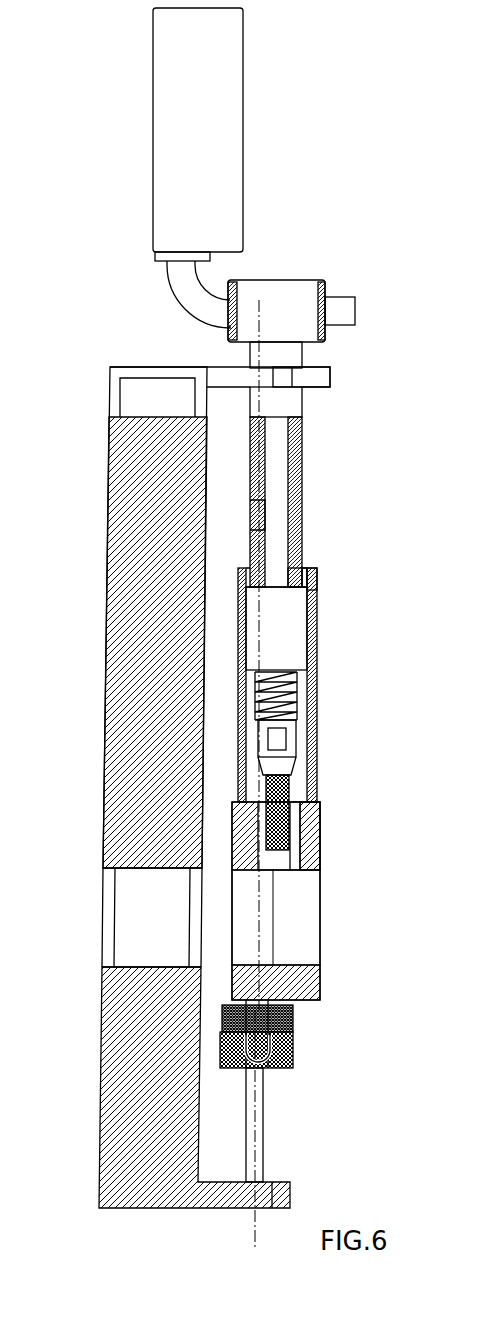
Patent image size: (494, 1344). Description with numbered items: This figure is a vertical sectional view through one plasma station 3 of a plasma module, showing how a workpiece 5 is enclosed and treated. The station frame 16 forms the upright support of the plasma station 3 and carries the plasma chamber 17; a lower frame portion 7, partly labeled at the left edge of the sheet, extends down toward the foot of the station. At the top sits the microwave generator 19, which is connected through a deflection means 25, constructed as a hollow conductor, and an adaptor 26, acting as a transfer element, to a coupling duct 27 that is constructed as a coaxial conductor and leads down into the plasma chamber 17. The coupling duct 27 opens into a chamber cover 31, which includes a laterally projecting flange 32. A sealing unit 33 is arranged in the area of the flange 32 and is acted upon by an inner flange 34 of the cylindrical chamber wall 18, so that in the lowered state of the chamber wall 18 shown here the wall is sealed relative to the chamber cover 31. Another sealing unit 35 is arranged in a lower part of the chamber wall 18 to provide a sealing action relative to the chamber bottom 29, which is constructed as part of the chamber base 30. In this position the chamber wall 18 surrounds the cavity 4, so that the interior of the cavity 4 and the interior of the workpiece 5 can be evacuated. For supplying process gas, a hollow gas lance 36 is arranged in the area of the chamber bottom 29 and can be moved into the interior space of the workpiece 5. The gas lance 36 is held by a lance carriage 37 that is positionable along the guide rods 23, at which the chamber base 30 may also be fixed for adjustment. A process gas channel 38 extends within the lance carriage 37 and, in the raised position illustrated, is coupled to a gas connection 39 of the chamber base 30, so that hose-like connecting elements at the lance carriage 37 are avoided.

The microwave generator 19 is at (228, 100).
The deflection means 25 is at (188, 298).
The adaptor 26 is at (305, 297).
The station frame 16 is at (115, 610).
The base 7 is at (145, 1087).
The coupling duct 27 is at (302, 432).
The inner flange 34 is at (250, 517).
The plasma chamber 17 is at (343, 628).
The chamber cover 31 is at (303, 567).
The sealing unit 33 is at (305, 572).
The flange 32 is at (317, 573).
The cavity 4 is at (288, 653).
The chamber wall 18 is at (317, 685).
The workpiece 5 is at (283, 733).
The chamber bottom 29 is at (320, 798).
The sealing unit 35 is at (320, 812).
The plasma station 3 is at (343, 845).
The chamber base 30 is at (307, 910).
The gas lance 36 is at (318, 865).
The gas connection 39 is at (233, 990).
The lance carriage 37 is at (293, 1022).
The process gas channel 38 is at (293, 1040).
The guide rods 23 is at (265, 1112).